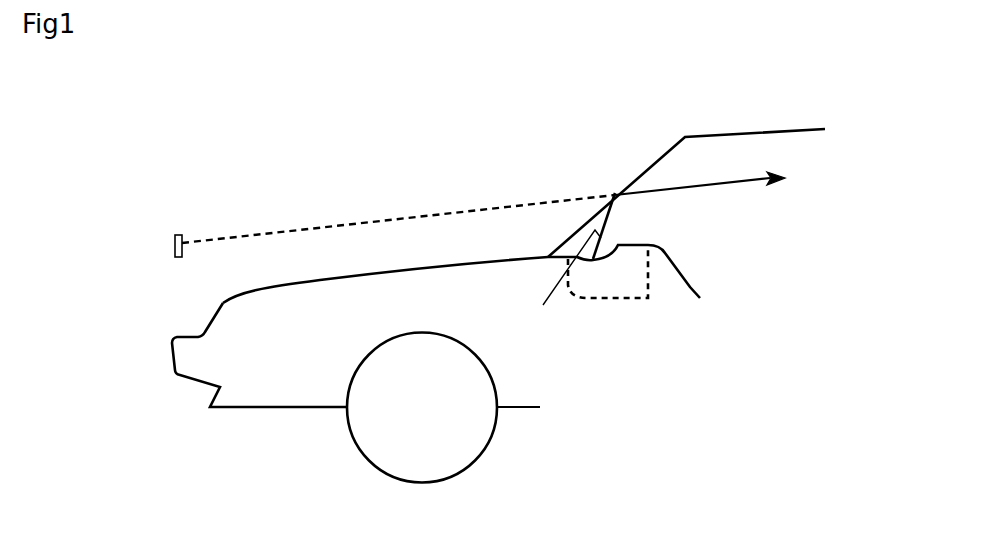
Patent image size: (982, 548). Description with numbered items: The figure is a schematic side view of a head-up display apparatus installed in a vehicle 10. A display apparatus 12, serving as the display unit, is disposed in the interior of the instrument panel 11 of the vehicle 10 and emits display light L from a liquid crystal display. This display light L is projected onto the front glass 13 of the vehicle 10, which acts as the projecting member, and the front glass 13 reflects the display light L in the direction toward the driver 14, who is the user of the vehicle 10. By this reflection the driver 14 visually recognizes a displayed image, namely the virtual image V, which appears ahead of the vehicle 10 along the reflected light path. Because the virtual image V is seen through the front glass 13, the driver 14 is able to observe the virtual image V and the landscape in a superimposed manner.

The vehicle 10 is at (278, 407).
The instrument panel 11 is at (668, 247).
The display apparatus 12 is at (617, 302).
The front glass 13 is at (640, 170).
The driver 14 is at (778, 175).
The virtual image V is at (175, 237).
The display light L is at (568, 283).